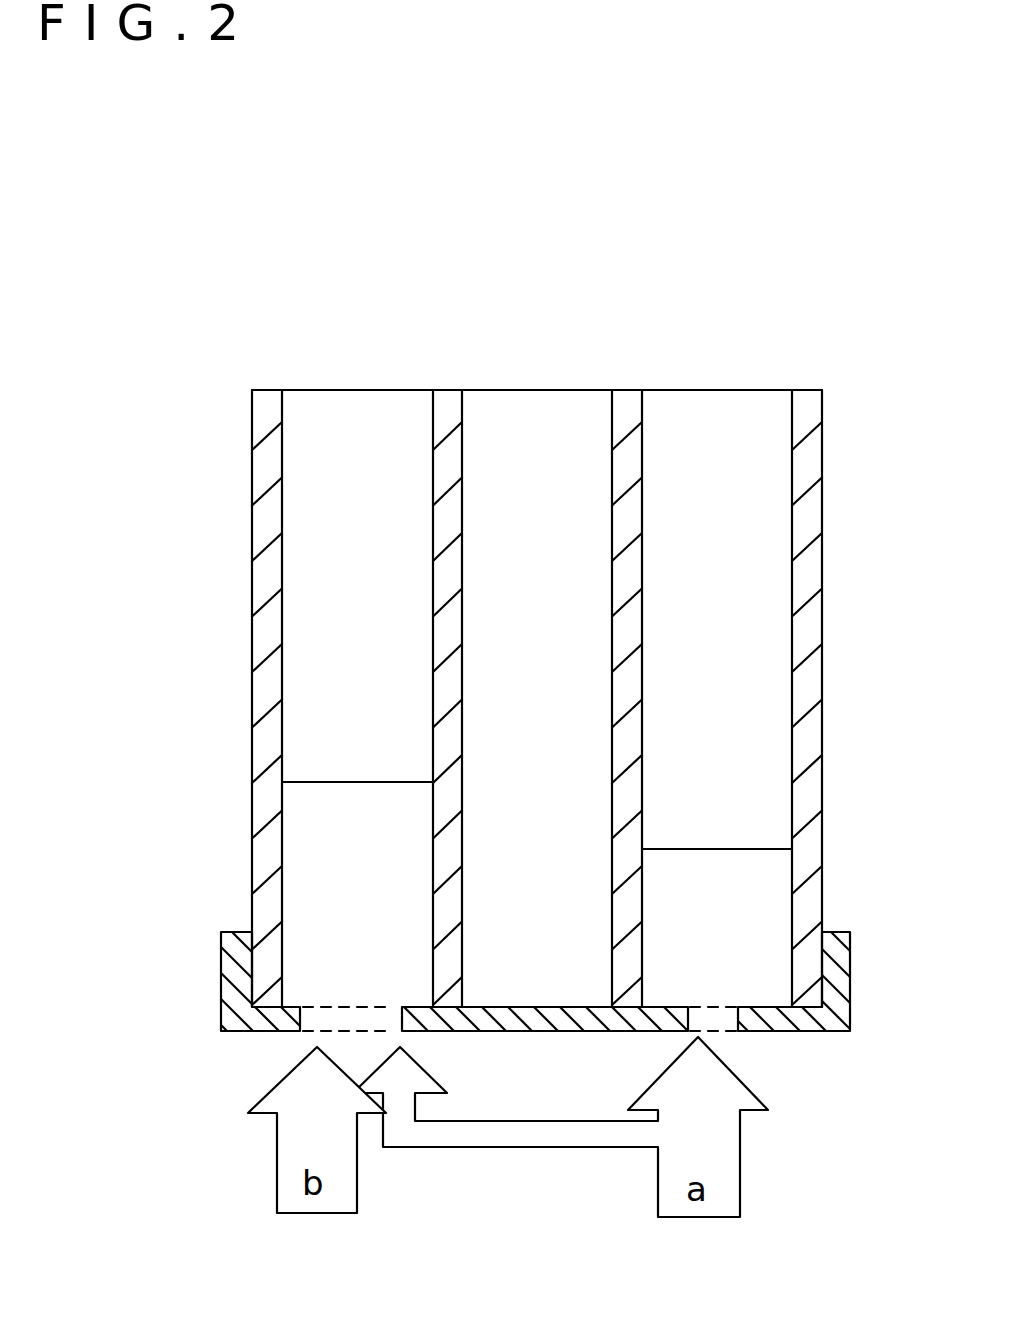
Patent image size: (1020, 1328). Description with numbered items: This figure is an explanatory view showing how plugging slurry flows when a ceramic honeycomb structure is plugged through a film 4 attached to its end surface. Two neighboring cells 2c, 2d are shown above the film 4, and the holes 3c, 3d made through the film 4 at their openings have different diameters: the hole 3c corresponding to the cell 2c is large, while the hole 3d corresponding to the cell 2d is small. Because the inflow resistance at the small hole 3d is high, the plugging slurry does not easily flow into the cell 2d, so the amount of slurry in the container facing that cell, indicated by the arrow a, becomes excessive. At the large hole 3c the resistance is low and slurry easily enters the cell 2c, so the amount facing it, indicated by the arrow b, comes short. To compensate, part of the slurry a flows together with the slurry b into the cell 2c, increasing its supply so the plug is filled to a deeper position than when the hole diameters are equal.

The cell 2c is at (310, 587).
The cell 2d is at (770, 628).
The hole 3c is at (343, 1017).
The hole 3d is at (713, 1007).
The film 4 is at (550, 1031).